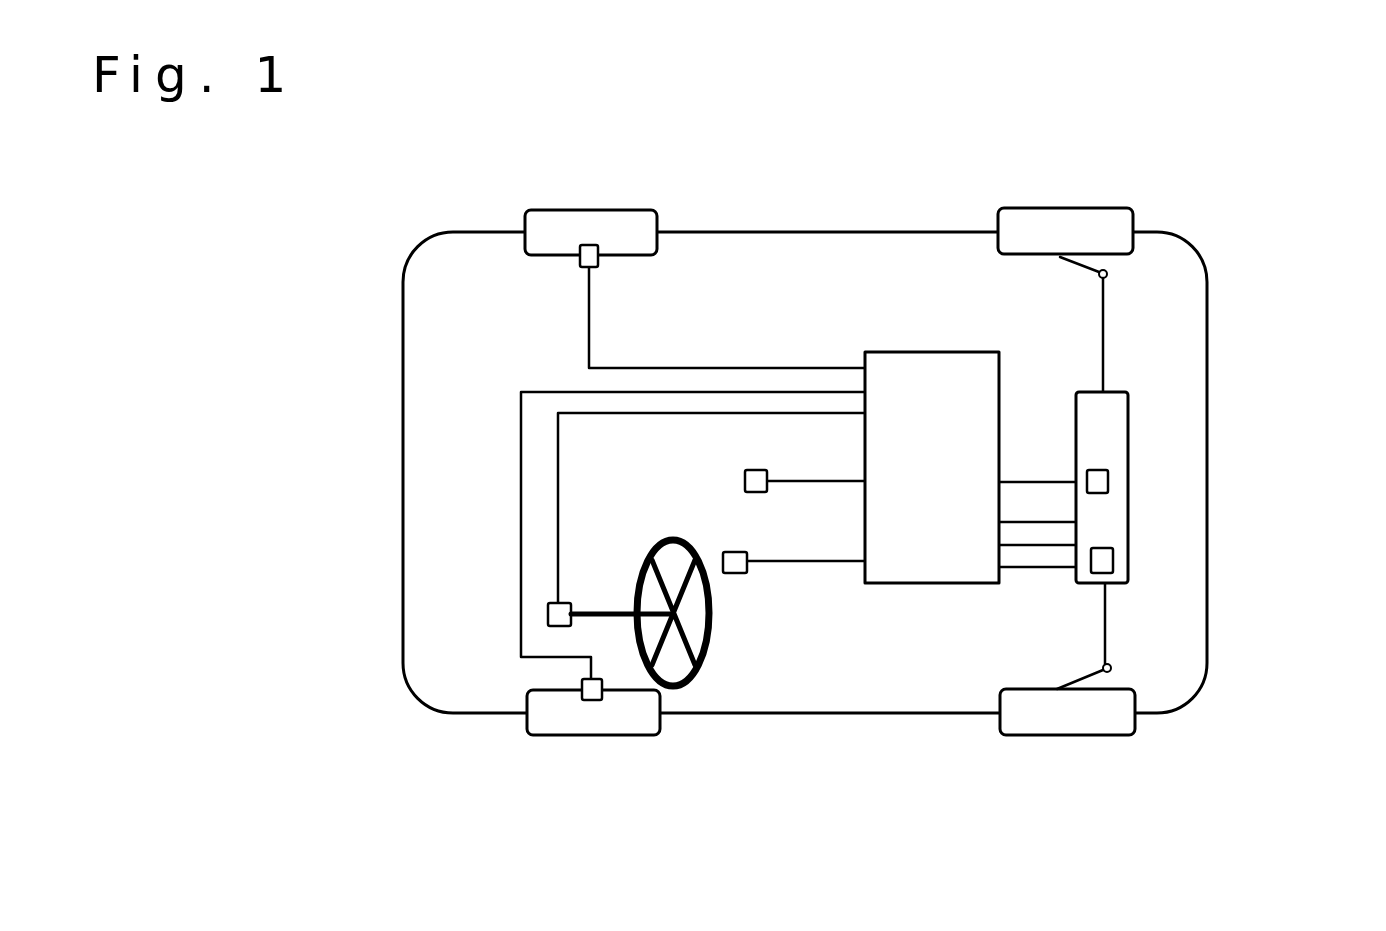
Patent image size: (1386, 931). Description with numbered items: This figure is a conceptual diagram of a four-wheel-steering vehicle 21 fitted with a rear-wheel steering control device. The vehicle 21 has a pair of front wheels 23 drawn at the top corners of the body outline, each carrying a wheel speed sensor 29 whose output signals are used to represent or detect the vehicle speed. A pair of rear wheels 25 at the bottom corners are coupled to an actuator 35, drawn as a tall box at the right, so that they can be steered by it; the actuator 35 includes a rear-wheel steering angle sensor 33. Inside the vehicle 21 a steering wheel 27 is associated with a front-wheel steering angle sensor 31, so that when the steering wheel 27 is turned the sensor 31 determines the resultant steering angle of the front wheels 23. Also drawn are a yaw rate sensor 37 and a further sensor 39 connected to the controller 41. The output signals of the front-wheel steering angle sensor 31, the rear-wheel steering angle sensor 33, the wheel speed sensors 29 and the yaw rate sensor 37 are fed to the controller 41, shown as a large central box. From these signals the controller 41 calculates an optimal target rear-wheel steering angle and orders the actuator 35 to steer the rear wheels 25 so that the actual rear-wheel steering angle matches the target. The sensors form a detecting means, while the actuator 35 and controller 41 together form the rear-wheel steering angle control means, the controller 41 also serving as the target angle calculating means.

The 4WS vehicle 21 is at (807, 270).
The front wheels 23 is at (558, 225).
The rear wheels 25 is at (1027, 225).
The steering wheel 27 is at (688, 680).
The wheel speed sensors 29 is at (589, 247).
The front-wheel steering angle sensor 31 is at (548, 618).
The rear-wheel steering angle sensor 33 is at (1105, 560).
The actuator 35 is at (1112, 437).
The yaw rate sensor 37 is at (752, 480).
The longitudinal acceleration sensor 39 is at (735, 563).
The controller 41 is at (927, 552).